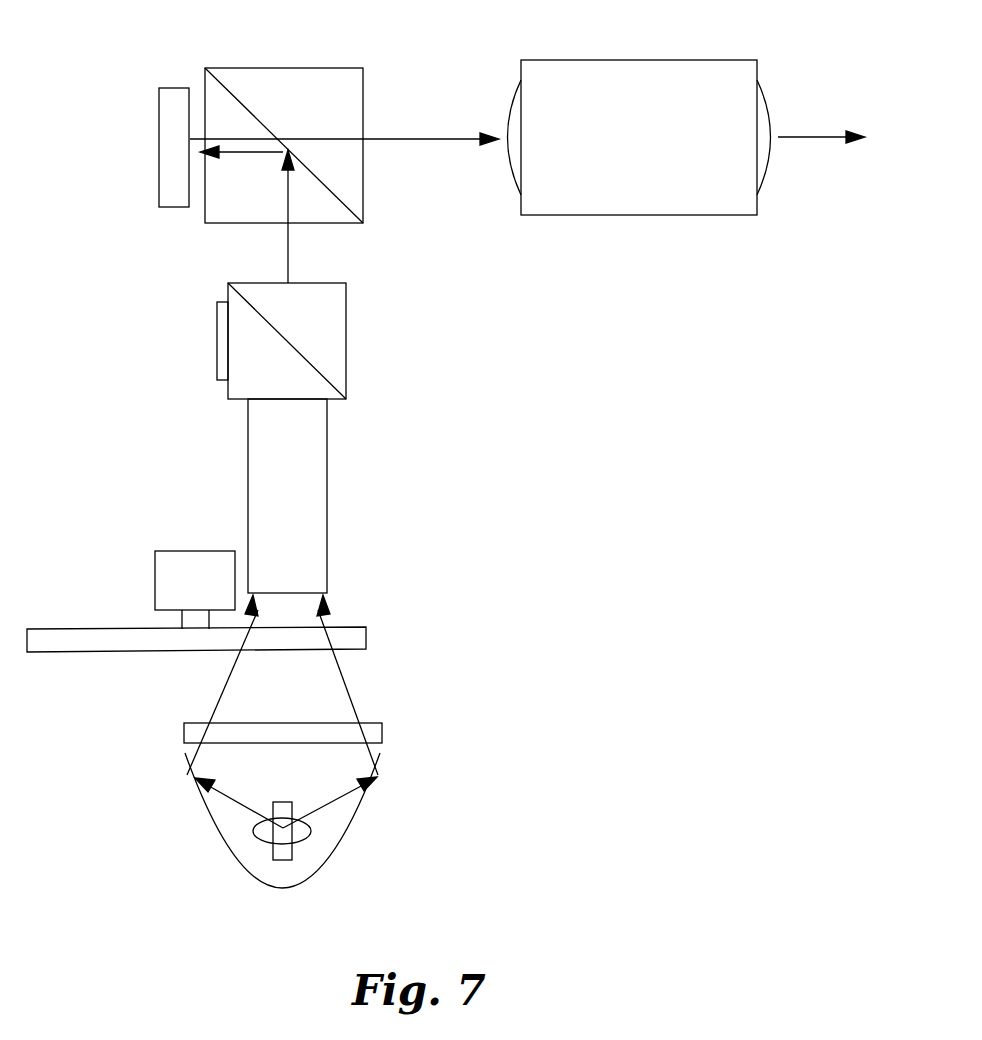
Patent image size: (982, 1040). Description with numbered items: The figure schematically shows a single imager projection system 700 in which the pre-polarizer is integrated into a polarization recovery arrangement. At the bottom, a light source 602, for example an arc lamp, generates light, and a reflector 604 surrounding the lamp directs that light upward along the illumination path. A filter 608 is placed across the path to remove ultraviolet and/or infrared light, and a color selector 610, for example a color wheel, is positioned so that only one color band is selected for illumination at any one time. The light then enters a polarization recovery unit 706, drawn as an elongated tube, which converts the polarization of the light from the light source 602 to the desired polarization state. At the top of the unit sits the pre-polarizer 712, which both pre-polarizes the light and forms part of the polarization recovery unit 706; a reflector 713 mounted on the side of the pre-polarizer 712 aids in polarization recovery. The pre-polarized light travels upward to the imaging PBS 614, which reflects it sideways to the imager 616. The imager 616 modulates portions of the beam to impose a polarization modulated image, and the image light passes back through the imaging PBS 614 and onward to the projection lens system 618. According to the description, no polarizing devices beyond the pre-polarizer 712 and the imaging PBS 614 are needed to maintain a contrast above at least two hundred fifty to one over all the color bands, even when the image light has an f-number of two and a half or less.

The light source 602 is at (282, 847).
The reflector 604 is at (213, 839).
The filter 608 is at (382, 731).
The color selector 610 is at (155, 563).
The imaging PBS 614 is at (307, 65).
The imager 616 is at (159, 115).
The projection lens system 618 is at (648, 57).
The projection system 700 is at (562, 385).
The polarization recovery unit 706 is at (327, 478).
The pre-polarizer 712 is at (346, 322).
The reflector 713 is at (217, 342).